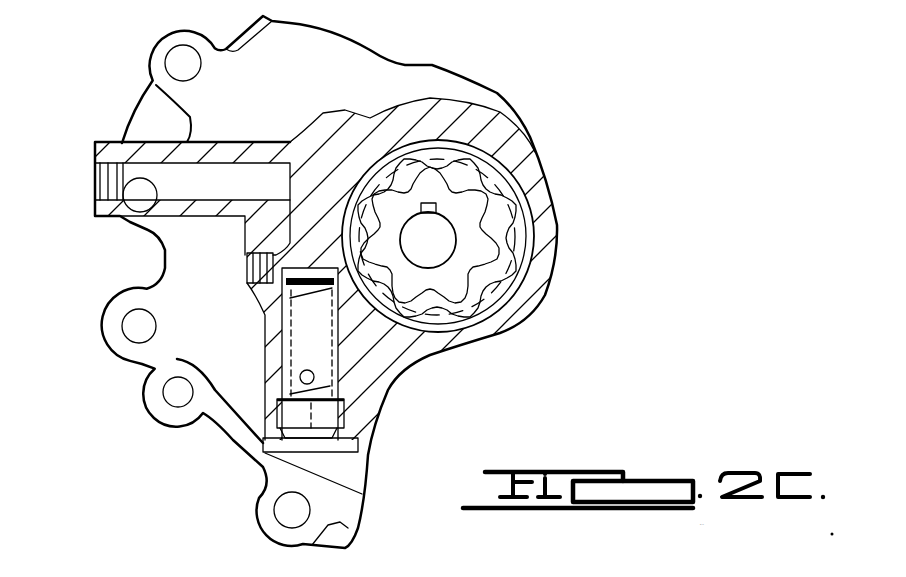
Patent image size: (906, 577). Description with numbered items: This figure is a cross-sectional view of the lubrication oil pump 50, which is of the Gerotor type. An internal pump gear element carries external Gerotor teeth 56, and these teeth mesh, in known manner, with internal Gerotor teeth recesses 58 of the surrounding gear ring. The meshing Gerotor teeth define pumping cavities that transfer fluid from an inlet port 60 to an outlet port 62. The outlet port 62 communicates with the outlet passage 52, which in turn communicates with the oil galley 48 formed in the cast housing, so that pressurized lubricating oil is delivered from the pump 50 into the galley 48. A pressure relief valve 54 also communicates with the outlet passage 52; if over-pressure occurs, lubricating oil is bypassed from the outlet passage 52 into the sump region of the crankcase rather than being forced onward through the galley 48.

The oil galley 48 is at (136, 201).
The lubrication oil pump 50 is at (483, 231).
The outlet passage 52 is at (220, 170).
The pressure relief valve 54 is at (274, 284).
The external Gerotor teeth 56 is at (448, 277).
The internal Gerotor teeth recesses 58 is at (510, 214).
The inlet port 60 is at (548, 302).
The outlet port 62 is at (526, 170).